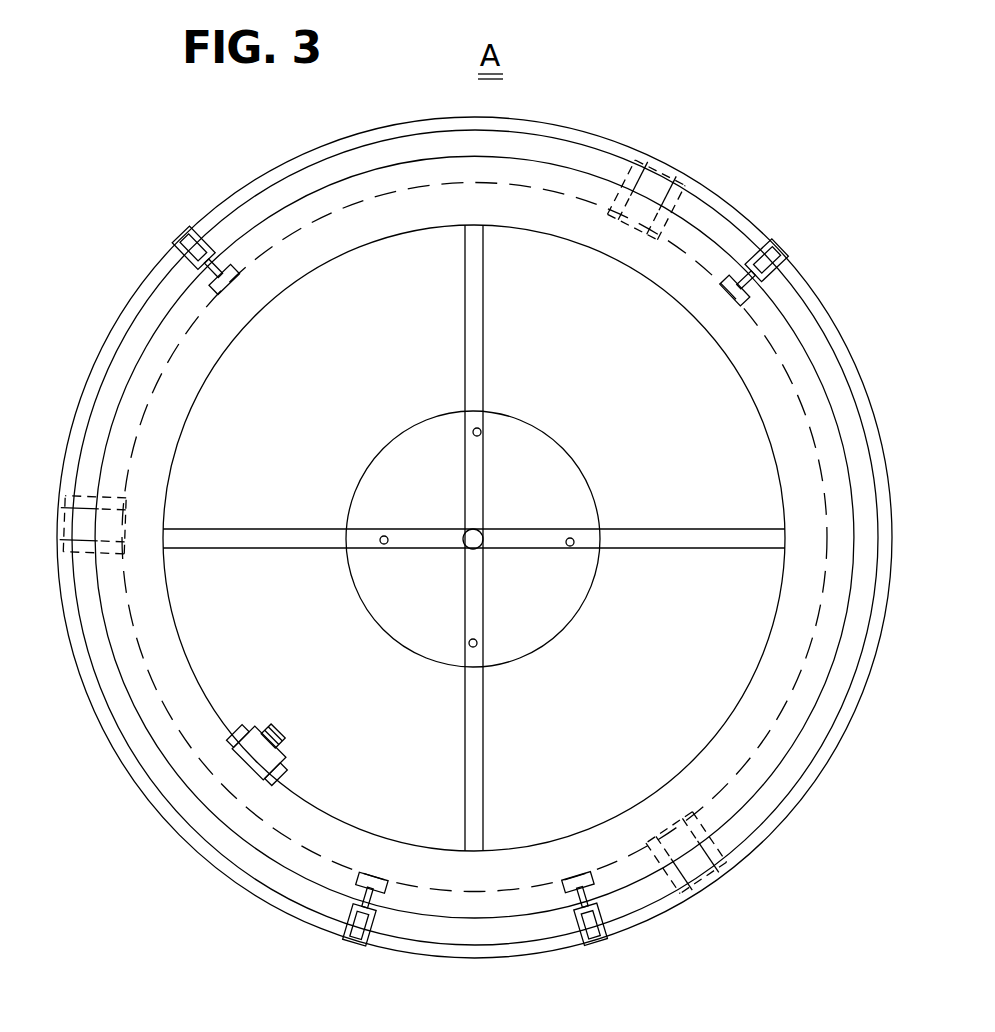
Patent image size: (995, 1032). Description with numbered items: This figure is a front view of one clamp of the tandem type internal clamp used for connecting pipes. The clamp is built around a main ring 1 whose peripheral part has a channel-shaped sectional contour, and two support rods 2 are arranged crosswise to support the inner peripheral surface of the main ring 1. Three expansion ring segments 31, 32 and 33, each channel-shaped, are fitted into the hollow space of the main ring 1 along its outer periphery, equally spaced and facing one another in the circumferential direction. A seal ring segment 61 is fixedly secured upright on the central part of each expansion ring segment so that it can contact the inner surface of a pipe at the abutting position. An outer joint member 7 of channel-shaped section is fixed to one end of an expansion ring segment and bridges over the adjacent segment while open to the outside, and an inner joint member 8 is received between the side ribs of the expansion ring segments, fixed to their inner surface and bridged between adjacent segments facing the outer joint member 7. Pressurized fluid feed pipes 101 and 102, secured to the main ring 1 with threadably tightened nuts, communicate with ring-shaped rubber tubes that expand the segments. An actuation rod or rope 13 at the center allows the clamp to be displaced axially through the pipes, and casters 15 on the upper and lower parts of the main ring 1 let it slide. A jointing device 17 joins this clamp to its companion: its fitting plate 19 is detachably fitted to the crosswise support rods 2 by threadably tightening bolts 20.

The main ring 1 is at (772, 662).
The support rods 2 is at (620, 550).
The expansion ring segment 31 is at (540, 147).
The expansion ring segment 32 is at (810, 738).
The expansion ring segment 33 is at (147, 758).
The seal ring segment 61 is at (598, 142).
The outer joint member 7 is at (668, 165).
The inner joint member 8 is at (668, 177).
The pressurized fluid feed pipe 101 is at (293, 723).
The pressurized fluid feed pipe 102 is at (246, 738).
The actuation rod or rope 13 is at (462, 546).
The casters 15 is at (790, 258).
The jointing device 17 is at (466, 498).
The fitting plate 19 is at (540, 455).
The bolts 20 is at (572, 540).